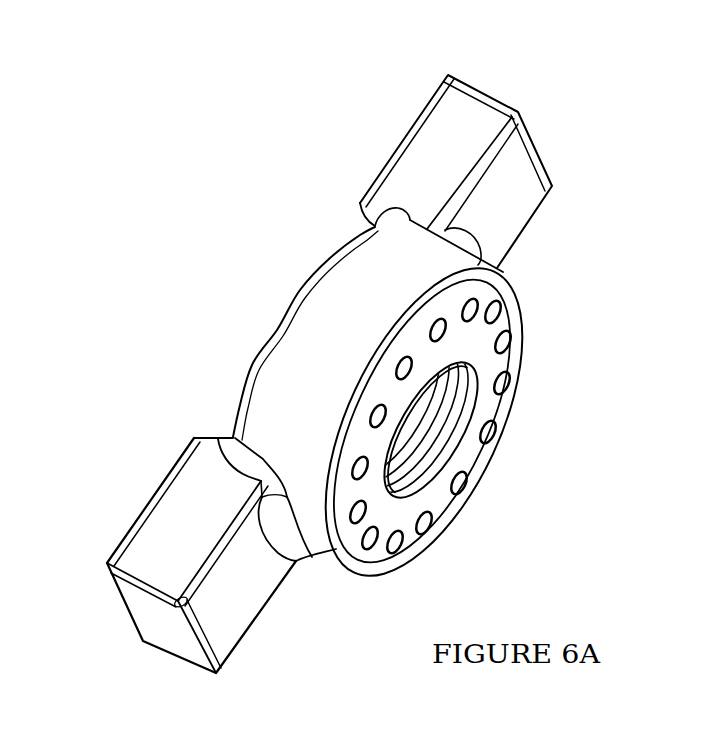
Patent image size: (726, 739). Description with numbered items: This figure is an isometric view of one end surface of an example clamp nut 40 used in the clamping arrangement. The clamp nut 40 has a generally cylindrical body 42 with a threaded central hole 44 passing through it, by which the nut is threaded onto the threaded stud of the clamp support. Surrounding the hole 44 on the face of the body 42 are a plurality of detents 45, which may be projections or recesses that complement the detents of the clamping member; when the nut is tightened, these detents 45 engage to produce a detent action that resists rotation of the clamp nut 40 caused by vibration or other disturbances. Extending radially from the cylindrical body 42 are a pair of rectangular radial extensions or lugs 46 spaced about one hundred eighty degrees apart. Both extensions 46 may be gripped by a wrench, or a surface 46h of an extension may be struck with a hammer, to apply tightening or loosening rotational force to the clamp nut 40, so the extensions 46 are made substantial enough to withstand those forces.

The clamp nut 40 is at (592, 282).
The cylindrical body 42 is at (313, 315).
The threaded central hole 44 is at (447, 447).
The detents 45 is at (517, 340).
The radial extensions or lugs 46 is at (515, 107).
The surface 46h is at (428, 157).